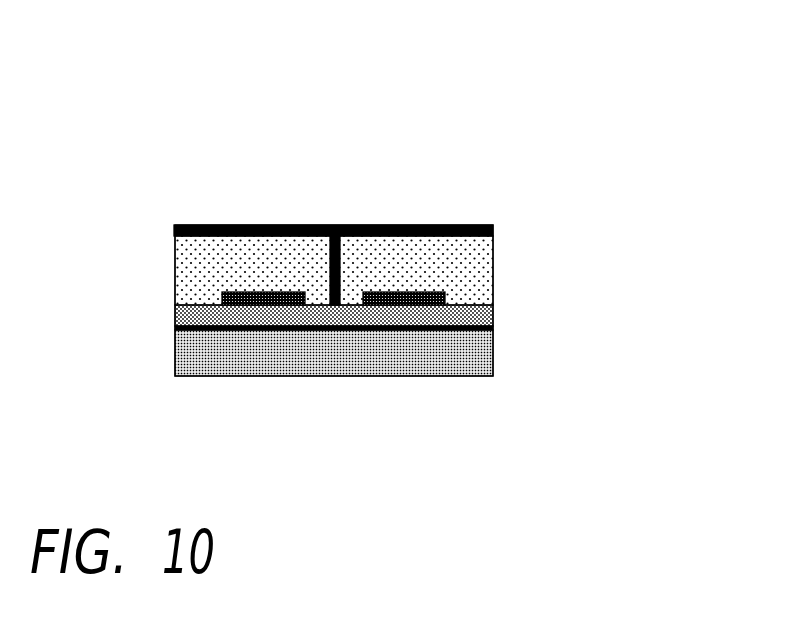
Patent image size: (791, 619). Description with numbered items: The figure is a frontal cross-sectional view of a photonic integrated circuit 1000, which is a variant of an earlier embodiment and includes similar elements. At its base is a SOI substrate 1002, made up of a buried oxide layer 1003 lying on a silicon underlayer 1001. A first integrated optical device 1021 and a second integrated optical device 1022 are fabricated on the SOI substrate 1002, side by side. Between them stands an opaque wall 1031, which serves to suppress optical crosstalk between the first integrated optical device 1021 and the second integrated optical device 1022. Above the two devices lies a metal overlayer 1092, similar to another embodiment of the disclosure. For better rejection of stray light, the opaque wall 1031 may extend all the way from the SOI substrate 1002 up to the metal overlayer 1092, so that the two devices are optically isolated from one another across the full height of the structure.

The photonic integrated circuit 1000 is at (603, 55).
The metal overlayer 1092 is at (207, 225).
The SOI substrate 1002 is at (322, 324).
The buried oxide layer 1003 is at (177, 315).
The silicon underlayer 1001 is at (177, 350).
The first integrated optical device 1021 is at (260, 292).
The second integrated optical device 1022 is at (417, 292).
The opaque wall 1031 is at (340, 257).